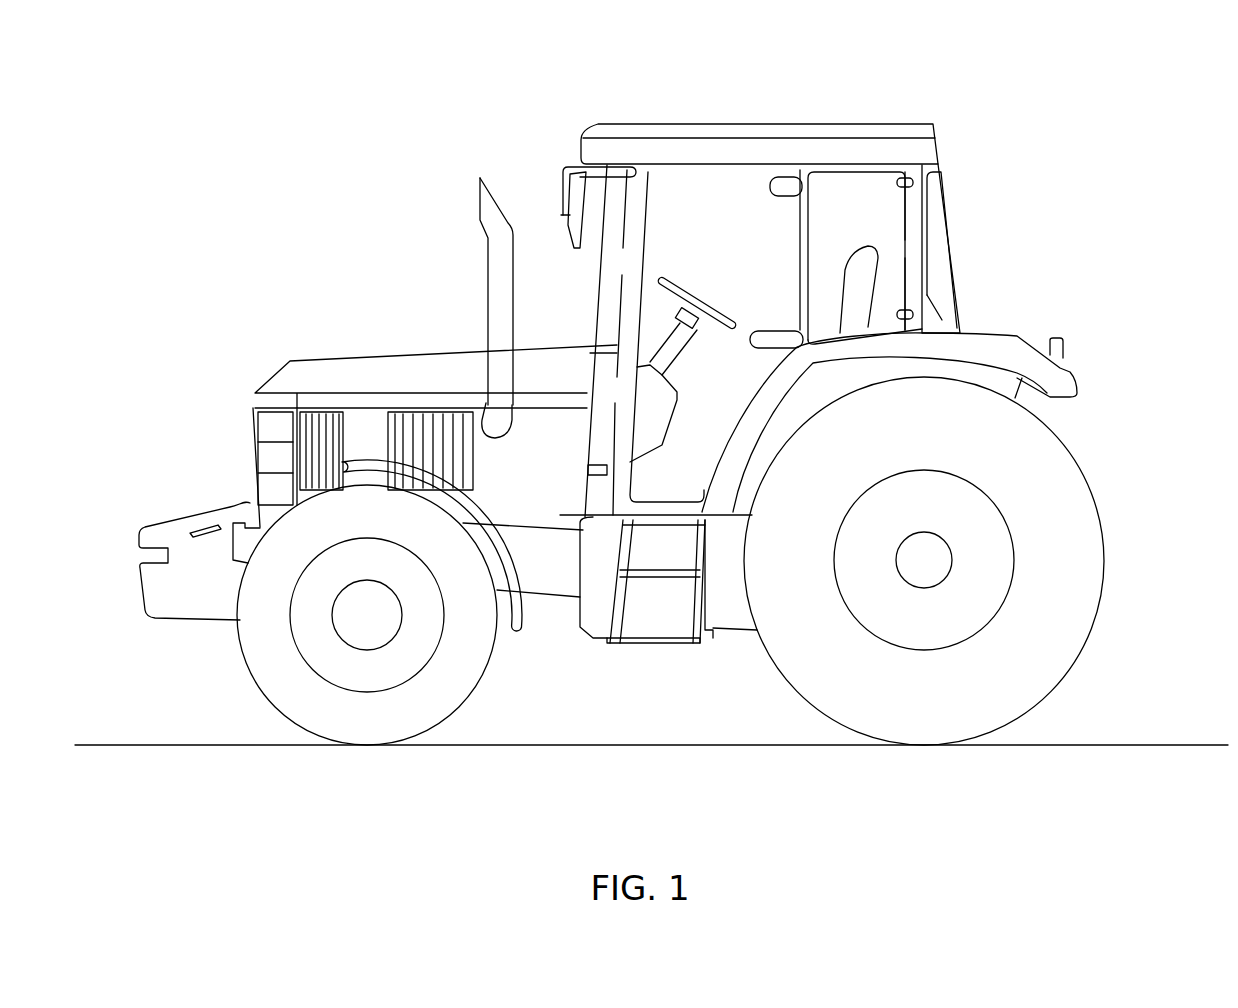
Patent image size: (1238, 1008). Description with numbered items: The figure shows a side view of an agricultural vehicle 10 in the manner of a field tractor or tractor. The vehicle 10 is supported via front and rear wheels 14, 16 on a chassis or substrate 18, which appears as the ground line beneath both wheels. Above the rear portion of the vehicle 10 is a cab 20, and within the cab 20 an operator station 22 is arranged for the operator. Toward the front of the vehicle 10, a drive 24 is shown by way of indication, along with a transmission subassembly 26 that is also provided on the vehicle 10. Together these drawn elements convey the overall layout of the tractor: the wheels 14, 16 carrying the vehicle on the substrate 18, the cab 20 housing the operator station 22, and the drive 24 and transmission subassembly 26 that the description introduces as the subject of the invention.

The agricultural vehicle 10 is at (530, 128).
The front wheels 14 is at (356, 748).
The rear wheels 16 is at (938, 748).
The substrate 18 is at (657, 747).
The cab 20 is at (760, 268).
The operator station 22 is at (365, 432).
The drive 24 is at (525, 470).
The transmission subassembly 26 is at (735, 237).